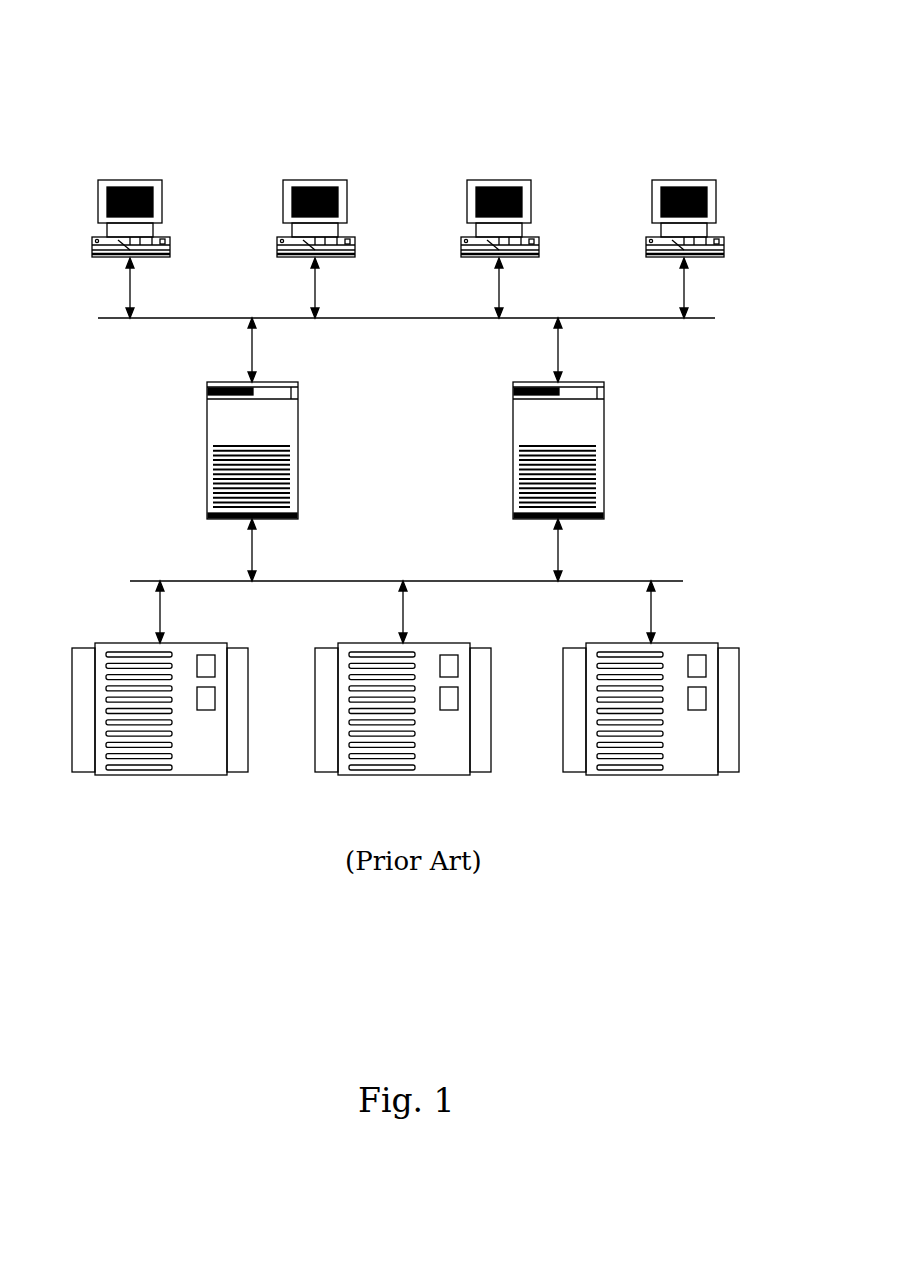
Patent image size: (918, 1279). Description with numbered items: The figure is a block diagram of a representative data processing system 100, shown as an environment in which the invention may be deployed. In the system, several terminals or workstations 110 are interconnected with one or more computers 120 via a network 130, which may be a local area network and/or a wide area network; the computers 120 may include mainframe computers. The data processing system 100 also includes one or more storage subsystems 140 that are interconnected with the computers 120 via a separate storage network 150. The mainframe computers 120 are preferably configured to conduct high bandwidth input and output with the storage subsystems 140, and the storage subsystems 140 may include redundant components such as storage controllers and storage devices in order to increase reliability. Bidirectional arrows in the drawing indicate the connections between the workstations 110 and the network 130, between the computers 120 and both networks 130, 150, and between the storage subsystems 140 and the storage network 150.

The data processing system 100 is at (63, 53).
The terminals or workstations 110 is at (163, 183).
The computers 120 is at (298, 383).
The network 130 is at (403, 318).
The storage subsystems 140 is at (249, 648).
The storage network 150 is at (343, 581).